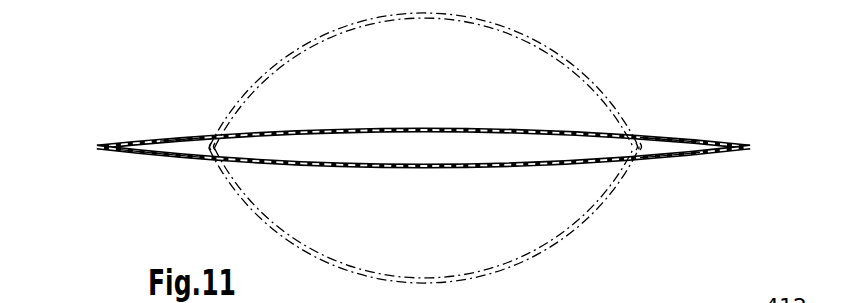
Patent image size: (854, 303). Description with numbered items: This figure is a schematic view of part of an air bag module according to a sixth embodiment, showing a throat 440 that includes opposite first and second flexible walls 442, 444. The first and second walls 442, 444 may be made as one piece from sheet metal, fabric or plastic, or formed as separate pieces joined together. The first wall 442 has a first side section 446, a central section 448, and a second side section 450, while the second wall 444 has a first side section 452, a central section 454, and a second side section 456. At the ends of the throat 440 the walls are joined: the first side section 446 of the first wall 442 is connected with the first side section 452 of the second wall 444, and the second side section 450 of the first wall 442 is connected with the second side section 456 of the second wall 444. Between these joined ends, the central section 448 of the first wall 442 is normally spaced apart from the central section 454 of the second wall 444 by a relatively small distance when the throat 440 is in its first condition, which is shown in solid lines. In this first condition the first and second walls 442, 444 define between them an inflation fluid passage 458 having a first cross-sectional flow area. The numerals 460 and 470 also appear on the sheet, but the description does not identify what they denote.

The throat 440 is at (141, 102).
The first flexible wall 442 is at (490, 116).
The second flexible wall 444 is at (464, 185).
The first side section of the first wall 446 is at (173, 138).
The central section of the first wall 448 is at (257, 78).
The second side section of the first wall 450 is at (680, 138).
The first side section of the second wall 452 is at (167, 153).
The central section of the second wall 454 is at (359, 170).
The second side section of the second wall 456 is at (675, 157).
The inflation fluid passage 458 is at (337, 148).
The lens element 460 is at (81, 302).
The lens element 470 is at (631, 298).